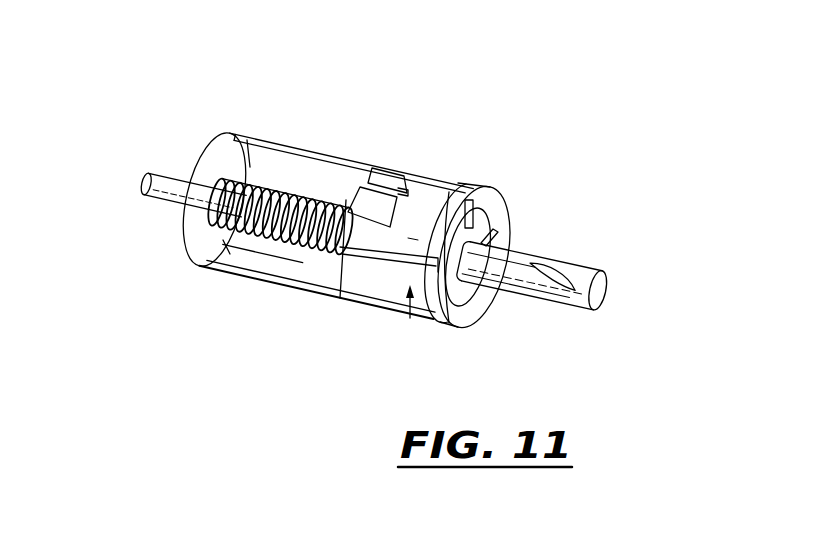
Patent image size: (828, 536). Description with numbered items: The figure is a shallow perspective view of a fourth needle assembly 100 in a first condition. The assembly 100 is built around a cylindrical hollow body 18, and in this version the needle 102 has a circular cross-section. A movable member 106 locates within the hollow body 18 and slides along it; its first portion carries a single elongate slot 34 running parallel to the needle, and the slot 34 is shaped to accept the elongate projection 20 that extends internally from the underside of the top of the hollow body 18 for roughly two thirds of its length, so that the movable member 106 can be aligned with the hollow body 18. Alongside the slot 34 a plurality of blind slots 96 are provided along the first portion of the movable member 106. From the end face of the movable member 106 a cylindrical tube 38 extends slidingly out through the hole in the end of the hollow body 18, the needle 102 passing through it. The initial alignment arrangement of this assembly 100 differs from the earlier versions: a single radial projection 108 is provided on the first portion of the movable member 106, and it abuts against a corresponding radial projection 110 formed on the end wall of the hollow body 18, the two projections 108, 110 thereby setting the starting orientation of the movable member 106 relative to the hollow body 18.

The fourth needle assembly 100 is at (327, 88).
The hollow body 18 is at (281, 285).
The elongate projection 20 is at (345, 168).
The elongate slot 34 is at (403, 264).
The blind slots 96 is at (402, 214).
The radial projection 108 is at (476, 207).
The radial projection 110 is at (500, 238).
The cylindrical tube 38 is at (597, 272).
The needle 102 is at (526, 280).
The movable member 106 is at (411, 320).